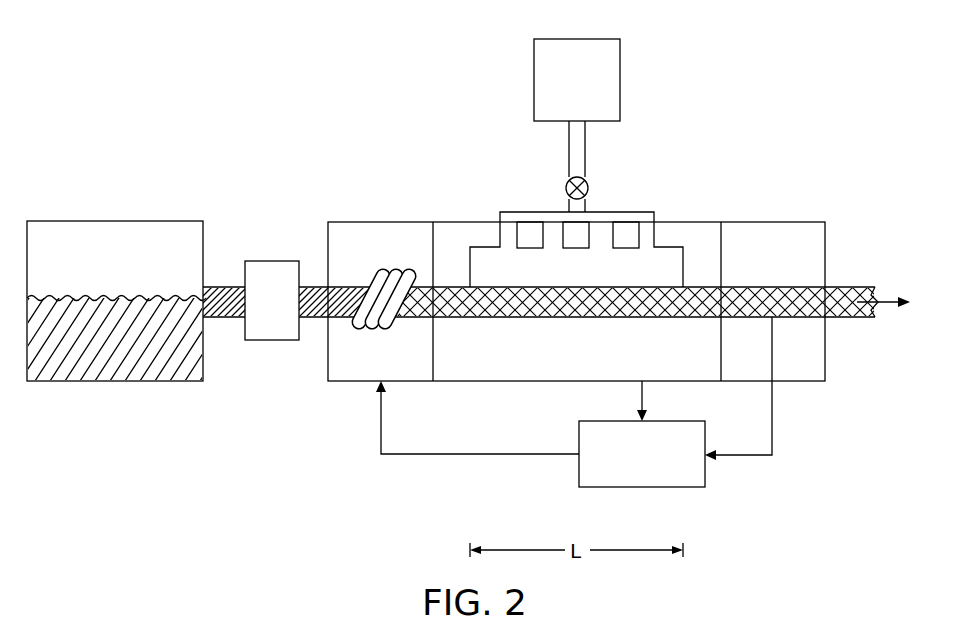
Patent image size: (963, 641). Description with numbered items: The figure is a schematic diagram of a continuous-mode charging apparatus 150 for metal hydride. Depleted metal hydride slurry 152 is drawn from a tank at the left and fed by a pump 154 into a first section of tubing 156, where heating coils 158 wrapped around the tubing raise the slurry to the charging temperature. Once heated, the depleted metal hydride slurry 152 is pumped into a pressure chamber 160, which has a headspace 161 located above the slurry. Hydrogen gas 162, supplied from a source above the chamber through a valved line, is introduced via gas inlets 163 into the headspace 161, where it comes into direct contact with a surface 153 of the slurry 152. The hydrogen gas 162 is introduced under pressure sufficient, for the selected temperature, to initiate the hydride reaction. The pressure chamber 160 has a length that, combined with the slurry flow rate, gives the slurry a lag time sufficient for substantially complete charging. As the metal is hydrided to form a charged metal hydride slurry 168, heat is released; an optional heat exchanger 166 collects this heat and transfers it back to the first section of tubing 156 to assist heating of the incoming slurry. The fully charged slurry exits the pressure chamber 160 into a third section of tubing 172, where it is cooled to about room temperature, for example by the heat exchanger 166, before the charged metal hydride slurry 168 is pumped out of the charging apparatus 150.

The continuous-mode charging apparatus 150 is at (186, 42).
The depleted metal hydride slurry 152 is at (80, 368).
The surface of the slurry 153 is at (500, 278).
The pump 154 is at (273, 262).
The first section of tubing 156 is at (322, 318).
The heating coils 158 is at (392, 262).
The pressure chamber 160 is at (690, 258).
The headspace 161 is at (596, 278).
The hydrogen gas 162 is at (621, 80).
The gas inlets 163 is at (497, 246).
The heat exchanger 166 is at (642, 487).
The charged metal hydride slurry 168 is at (848, 303).
The third section of tubing 172 is at (782, 318).